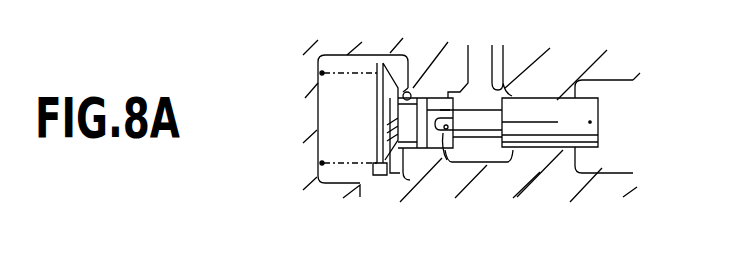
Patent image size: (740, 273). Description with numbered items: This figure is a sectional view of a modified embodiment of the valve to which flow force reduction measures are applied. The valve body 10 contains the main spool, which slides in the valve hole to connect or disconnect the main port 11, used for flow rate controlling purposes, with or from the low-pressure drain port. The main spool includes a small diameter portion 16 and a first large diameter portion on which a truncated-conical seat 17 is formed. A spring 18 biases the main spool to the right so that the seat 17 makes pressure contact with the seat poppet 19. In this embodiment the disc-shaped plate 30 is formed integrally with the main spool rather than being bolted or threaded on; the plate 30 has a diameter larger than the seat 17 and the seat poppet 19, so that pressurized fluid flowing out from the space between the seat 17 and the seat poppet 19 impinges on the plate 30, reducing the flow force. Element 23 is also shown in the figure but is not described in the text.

The valve body 10 is at (574, 70).
The main port 11 is at (520, 49).
The small diameter portion 16 is at (484, 150).
The seat 17 is at (391, 182).
The spring 18 is at (325, 70).
The seat poppet 19 is at (407, 91).
The retainer 23 is at (439, 168).
The disc-shaped plate 30 is at (376, 120).